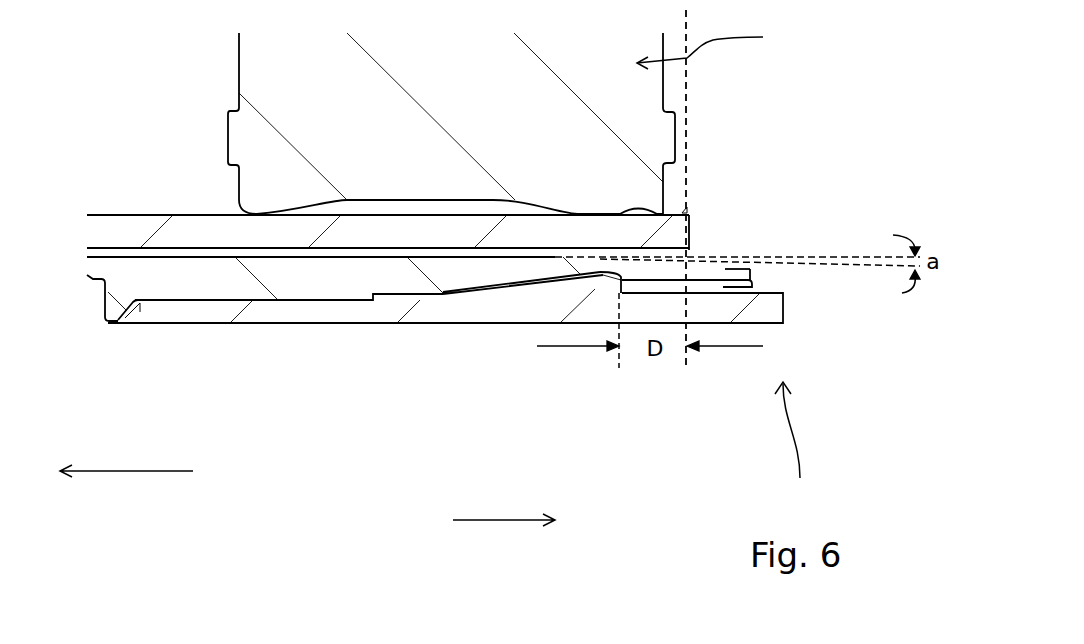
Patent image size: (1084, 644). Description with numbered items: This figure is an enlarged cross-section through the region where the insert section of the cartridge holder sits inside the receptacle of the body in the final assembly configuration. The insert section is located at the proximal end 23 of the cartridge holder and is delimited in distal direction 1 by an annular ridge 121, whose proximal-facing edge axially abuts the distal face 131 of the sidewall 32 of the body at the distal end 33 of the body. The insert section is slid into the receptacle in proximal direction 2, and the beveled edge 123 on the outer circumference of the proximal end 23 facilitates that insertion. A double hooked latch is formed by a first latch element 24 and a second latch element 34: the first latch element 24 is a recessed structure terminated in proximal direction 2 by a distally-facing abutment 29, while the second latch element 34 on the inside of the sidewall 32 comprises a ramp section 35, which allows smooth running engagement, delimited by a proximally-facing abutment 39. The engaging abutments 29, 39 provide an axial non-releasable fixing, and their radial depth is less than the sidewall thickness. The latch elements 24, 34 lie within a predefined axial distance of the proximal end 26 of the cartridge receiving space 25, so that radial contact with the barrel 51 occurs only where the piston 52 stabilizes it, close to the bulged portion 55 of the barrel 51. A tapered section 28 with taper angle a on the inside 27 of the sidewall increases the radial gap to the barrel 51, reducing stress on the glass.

The distal direction 1 is at (126, 485).
The proximal direction 2 is at (504, 535).
The proximal end 23 is at (796, 442).
The first latch element 24 is at (650, 287).
The cartridge receiving space 25 is at (718, 48).
The proximal end of the cartridge receiving space 26 is at (687, 142).
The inside of the sidewall 27 is at (388, 262).
The tapered section 28 is at (750, 269).
The distally-facing abutment 29 is at (752, 281).
The sidewall of the body 32 is at (293, 308).
The distal end of the body 33 is at (417, 313).
The second latch element 34 is at (608, 280).
The ramp section 35 is at (552, 290).
The proximally-facing abutment 39 is at (613, 286).
The barrel 51 is at (672, 232).
The piston 52 is at (465, 97).
The bulged portion 55 is at (687, 213).
The annular ridge 121 is at (112, 302).
The beveled edge 123 is at (752, 287).
The distal face 131 is at (137, 299).